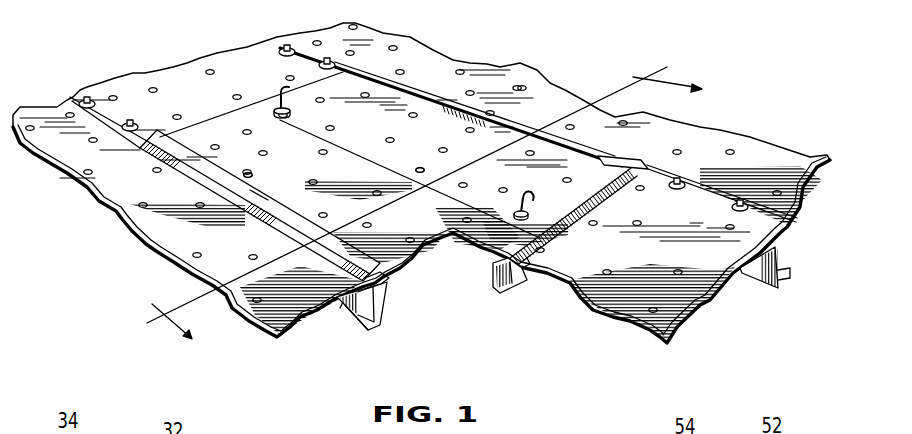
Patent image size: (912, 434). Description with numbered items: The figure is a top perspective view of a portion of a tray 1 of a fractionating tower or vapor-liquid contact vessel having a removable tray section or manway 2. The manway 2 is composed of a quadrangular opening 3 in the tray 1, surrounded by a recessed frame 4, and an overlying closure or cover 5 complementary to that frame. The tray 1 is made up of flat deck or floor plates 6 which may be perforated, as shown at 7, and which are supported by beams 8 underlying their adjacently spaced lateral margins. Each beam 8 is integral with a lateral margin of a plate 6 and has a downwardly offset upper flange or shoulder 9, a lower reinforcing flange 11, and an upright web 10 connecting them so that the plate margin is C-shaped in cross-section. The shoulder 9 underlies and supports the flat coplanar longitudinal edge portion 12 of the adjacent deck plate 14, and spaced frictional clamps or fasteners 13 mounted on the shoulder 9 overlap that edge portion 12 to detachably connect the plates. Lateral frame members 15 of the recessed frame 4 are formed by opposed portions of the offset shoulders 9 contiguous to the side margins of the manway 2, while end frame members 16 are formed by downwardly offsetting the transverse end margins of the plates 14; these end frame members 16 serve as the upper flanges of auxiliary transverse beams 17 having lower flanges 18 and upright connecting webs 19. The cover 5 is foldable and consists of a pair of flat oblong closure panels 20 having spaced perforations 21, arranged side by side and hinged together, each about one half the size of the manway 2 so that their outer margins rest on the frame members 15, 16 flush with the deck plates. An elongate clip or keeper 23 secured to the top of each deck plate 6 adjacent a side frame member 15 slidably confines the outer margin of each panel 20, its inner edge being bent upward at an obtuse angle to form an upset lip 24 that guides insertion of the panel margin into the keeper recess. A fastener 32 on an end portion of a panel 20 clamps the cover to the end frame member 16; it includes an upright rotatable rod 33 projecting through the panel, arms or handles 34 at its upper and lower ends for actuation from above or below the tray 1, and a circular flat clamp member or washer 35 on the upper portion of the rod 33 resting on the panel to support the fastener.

The tray 1 is at (511, 57).
The removable tray section or manway 2 is at (200, 130).
The opening 3 is at (453, 247).
The recessed frame 4 is at (493, 256).
The closure or cover 5 is at (397, 103).
The deck or floor plate 6 is at (370, 35).
The perforations 7 is at (524, 88).
The beam 8 is at (390, 317).
The upper flange or shoulder 9 is at (788, 238).
The web 10 is at (390, 297).
The lower reinforcing flange 11 is at (353, 312).
The longitudinal edge portion 12 is at (262, 45).
The frictional clamps or fasteners 13 is at (68, 98).
The adjacent deck plate 14 is at (115, 97).
The lateral or side frame member 15 is at (384, 278).
The end frame member 16 is at (499, 285).
The auxiliary or secondary tray support or beam 17 is at (493, 284).
The lower flange 18 is at (528, 280).
The upright connecting web 19 is at (482, 272).
The closure member or panel 20 is at (345, 142).
The perforations 21 is at (418, 169).
The clip or keeper 23 is at (508, 120).
The upset lip 24 is at (460, 114).
The fastener 32 is at (275, 88).
The rod 33 is at (512, 203).
The arms or handles 34 is at (532, 183).
The clamp member or washer 35 is at (288, 120).